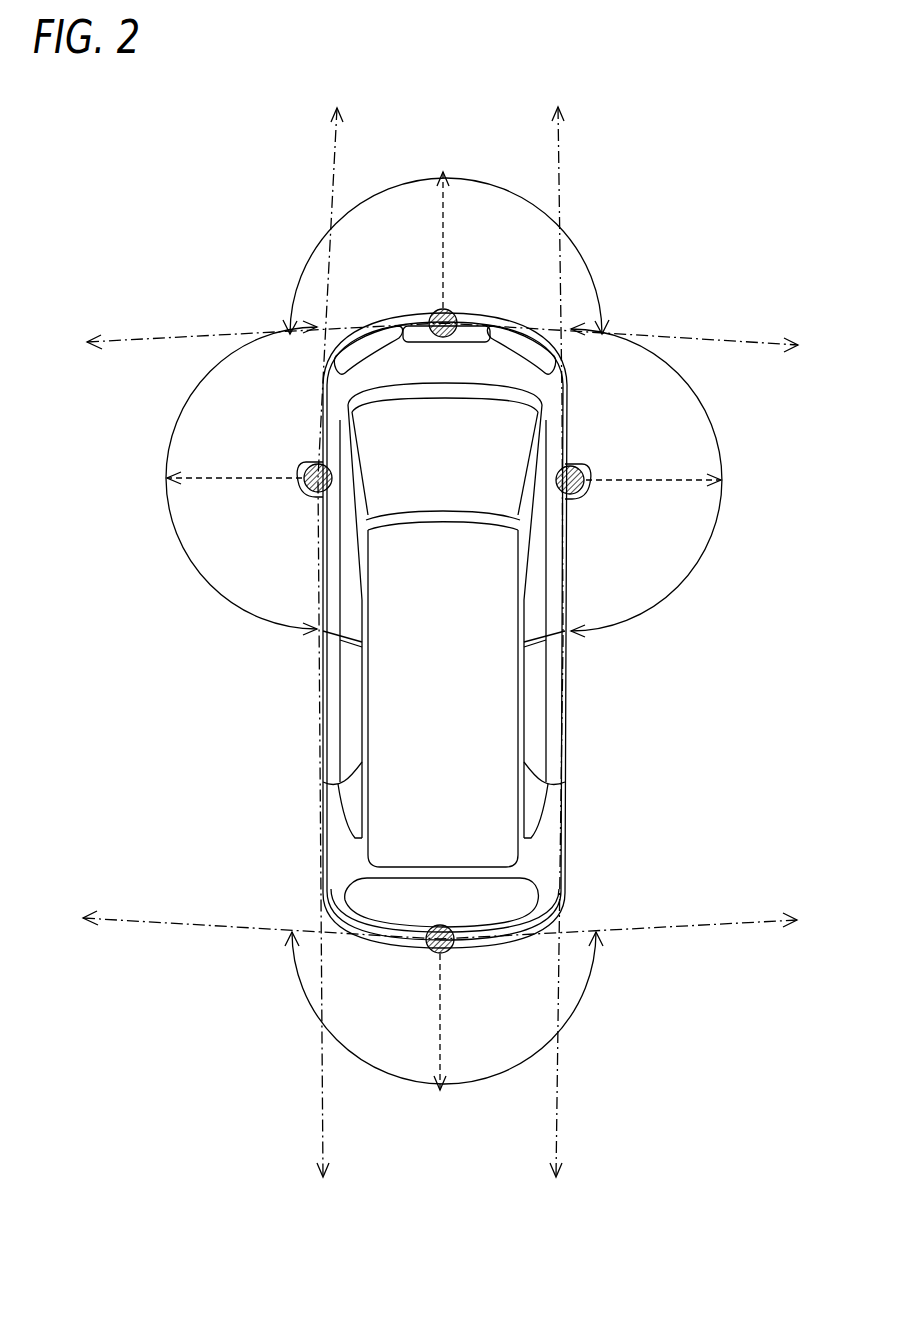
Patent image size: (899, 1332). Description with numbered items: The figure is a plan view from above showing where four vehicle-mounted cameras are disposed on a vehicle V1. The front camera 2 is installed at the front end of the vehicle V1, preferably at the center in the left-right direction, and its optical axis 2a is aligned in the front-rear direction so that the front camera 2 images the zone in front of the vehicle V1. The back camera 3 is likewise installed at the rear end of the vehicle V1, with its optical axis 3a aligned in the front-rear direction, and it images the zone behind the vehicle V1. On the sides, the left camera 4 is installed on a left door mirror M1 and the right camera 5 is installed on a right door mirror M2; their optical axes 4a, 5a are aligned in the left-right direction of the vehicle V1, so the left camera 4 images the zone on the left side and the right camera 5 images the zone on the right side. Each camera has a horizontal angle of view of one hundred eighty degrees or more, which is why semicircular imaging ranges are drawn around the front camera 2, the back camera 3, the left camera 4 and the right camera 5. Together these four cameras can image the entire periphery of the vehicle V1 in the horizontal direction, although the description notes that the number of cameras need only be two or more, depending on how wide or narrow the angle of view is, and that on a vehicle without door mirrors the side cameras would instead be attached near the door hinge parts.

The vehicle V1 is at (470, 693).
The front camera 2 is at (438, 312).
The optical axis of the front camera 2a is at (448, 255).
The back camera 3 is at (453, 953).
The optical axis of the back camera 3a is at (438, 1030).
The left camera 4 is at (305, 462).
The optical axis of the left camera 4a is at (240, 484).
The right camera 5 is at (583, 464).
The optical axis of the right camera 5a is at (656, 485).
The left door mirror M1 is at (300, 500).
The right door mirror M2 is at (590, 505).